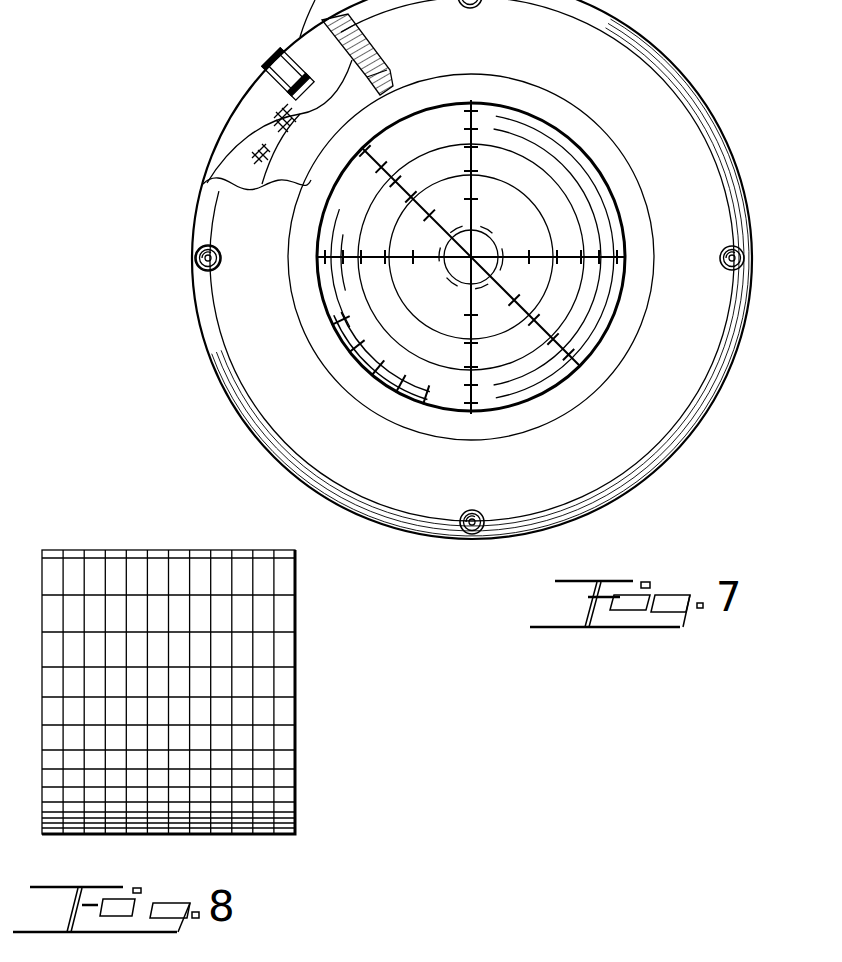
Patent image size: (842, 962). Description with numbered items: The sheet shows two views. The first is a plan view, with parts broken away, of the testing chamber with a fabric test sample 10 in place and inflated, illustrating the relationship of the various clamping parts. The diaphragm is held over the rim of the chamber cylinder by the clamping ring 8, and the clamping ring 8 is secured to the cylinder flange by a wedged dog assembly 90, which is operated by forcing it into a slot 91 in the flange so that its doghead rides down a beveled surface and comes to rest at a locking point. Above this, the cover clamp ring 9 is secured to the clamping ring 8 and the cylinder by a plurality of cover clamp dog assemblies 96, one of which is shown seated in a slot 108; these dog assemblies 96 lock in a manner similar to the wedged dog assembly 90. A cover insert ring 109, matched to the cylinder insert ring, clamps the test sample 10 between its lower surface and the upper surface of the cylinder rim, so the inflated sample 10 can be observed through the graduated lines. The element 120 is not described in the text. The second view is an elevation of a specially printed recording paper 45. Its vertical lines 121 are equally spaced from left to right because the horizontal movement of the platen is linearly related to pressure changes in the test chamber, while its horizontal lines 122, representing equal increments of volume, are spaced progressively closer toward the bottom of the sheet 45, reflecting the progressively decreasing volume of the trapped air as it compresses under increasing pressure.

In FIG. 7, the clamping ring 8 is at (283, 102).
In FIG. 7, the cover clamp ring 9 is at (227, 200).
In FIG. 7, the test sample 10 is at (565, 216).
In FIG. 8, the recording paper 45 is at (298, 655).
In FIG. 7, the wedged dog assembly 90 is at (282, 56).
In FIG. 7, the slot 91 is at (265, 66).
In FIG. 7, the dog assemblies 96 is at (197, 270).
In FIG. 7, the slot 108 is at (195, 252).
In FIG. 7, the cover insert ring 109 is at (262, 156).
In FIG. 7, the bezel ring 120 is at (203, 337).
In FIG. 8, the vertical lines 121 is at (253, 610).
In FIG. 8, the horizontal lines 122 is at (282, 722).